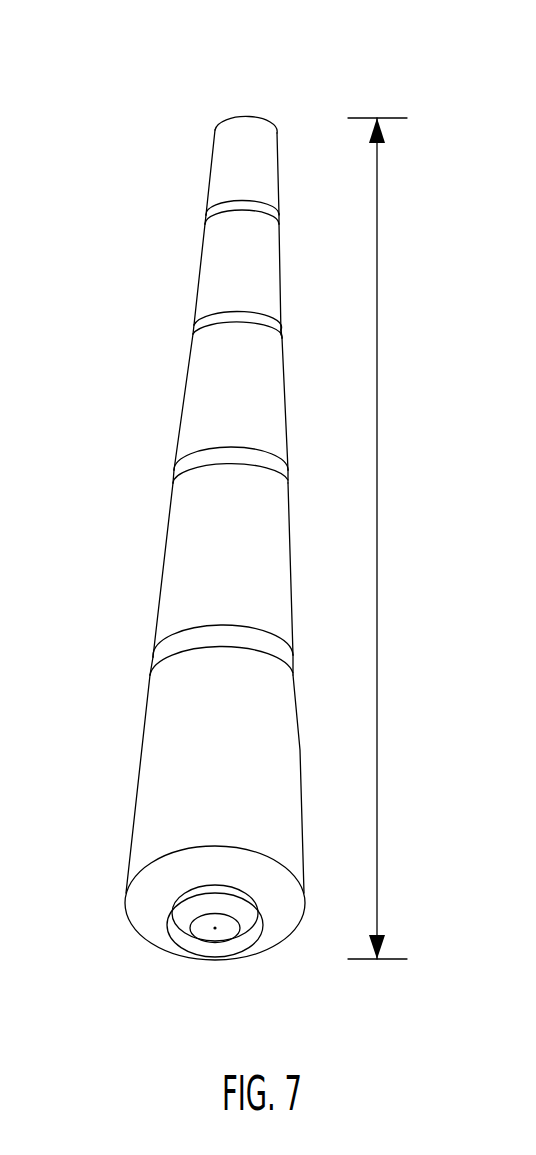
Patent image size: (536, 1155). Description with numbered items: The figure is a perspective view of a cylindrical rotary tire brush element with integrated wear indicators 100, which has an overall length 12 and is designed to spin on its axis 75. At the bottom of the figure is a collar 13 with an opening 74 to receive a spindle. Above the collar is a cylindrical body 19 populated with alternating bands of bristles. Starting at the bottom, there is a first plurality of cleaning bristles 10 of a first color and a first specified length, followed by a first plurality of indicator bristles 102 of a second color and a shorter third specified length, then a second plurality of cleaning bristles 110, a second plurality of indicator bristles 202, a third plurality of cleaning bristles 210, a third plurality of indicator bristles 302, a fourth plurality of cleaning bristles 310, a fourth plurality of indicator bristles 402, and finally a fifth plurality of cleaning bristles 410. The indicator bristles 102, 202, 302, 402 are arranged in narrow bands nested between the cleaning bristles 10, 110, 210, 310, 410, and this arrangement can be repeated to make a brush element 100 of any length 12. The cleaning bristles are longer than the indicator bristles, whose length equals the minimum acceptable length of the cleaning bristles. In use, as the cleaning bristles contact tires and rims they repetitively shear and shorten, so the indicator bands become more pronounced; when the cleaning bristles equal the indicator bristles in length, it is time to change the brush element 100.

The cylindrical rotary tire brush element with integrated wear indicators 100 is at (208, 124).
The fifth plurality of cleaning bristles 410 is at (223, 152).
The fourth plurality of indicator bristles 402 is at (213, 212).
The fourth plurality of cleaning bristles 310 is at (210, 248).
The third plurality of indicator bristles 302 is at (197, 323).
The third plurality of cleaning bristles 210 is at (192, 365).
The second plurality of indicator bristles 202 is at (212, 447).
The second plurality of cleaning bristles 110 is at (178, 563).
The first plurality of indicator bristles 102 is at (167, 653).
The first plurality of cleaning bristles 10 is at (150, 788).
The cylindrical body 19 is at (197, 891).
The collar 13 is at (242, 942).
The opening 74 is at (205, 932).
The axis 75 is at (215, 931).
The length 12 is at (378, 493).